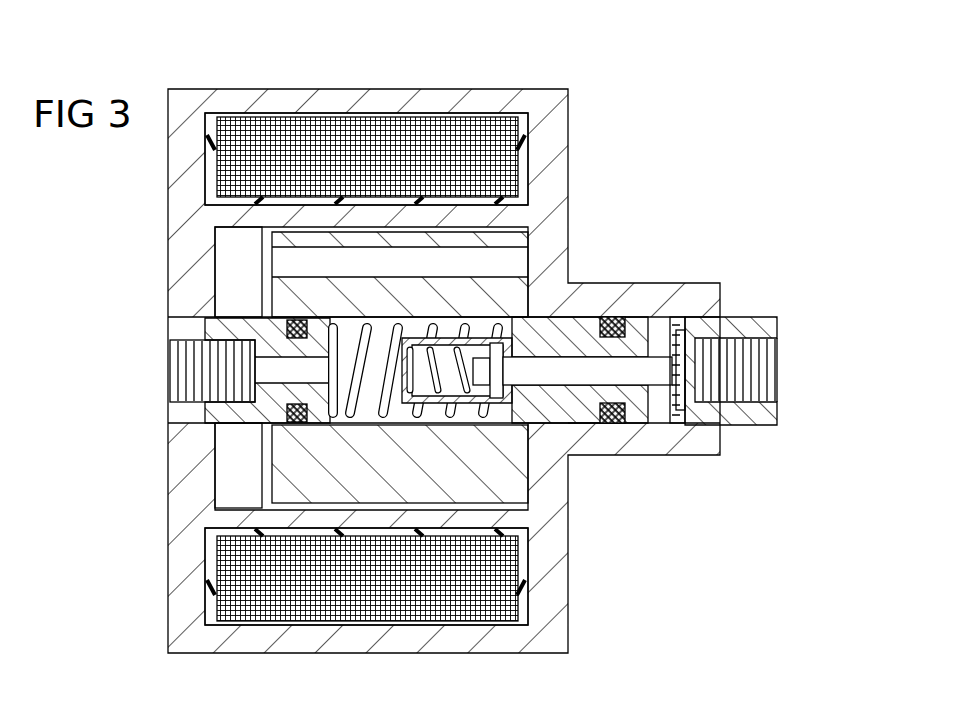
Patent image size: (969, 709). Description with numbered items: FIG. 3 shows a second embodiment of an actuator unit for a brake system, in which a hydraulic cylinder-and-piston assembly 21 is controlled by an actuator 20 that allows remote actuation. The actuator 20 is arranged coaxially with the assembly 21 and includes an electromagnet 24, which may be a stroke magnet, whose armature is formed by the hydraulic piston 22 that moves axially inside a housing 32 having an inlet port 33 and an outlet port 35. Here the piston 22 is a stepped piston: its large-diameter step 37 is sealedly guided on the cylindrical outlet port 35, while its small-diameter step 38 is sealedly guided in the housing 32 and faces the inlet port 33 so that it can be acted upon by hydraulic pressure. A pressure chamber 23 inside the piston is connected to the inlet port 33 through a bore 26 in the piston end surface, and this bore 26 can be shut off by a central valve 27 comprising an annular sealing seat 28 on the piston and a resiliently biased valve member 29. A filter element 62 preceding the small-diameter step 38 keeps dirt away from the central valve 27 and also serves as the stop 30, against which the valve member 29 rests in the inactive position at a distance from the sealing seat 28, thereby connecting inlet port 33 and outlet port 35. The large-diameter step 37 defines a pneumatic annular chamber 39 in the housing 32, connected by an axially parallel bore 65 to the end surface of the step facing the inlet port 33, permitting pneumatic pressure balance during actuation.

The actuator 20 is at (540, 117).
The hydraulic cylinder-and-piston assembly 21 is at (254, 441).
The hydraulic piston 22 is at (493, 390).
The pressure chamber 23 is at (347, 328).
The electromagnet 24 is at (483, 127).
The bore 26 is at (587, 348).
The central valve 27 is at (514, 346).
The sealing seat 28 is at (513, 390).
The valve member 29 is at (497, 492).
The stop 30 is at (683, 345).
The housing 32 is at (182, 615).
The inlet port 33 is at (763, 325).
The outlet port 35 is at (177, 405).
The large-diameter step 37 is at (272, 481).
The small-diameter step 38 is at (588, 425).
The pneumatic annular chamber 39 is at (235, 257).
The filter element 62 is at (680, 393).
The bore 65 is at (292, 263).